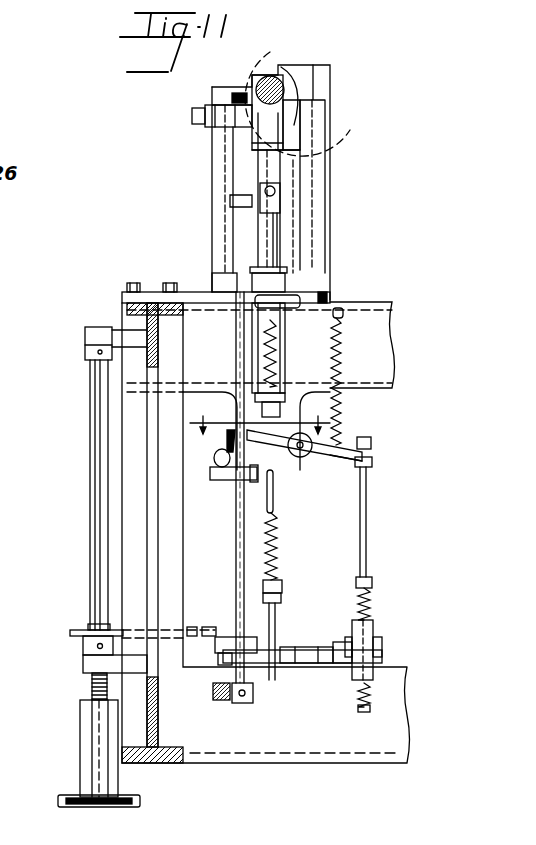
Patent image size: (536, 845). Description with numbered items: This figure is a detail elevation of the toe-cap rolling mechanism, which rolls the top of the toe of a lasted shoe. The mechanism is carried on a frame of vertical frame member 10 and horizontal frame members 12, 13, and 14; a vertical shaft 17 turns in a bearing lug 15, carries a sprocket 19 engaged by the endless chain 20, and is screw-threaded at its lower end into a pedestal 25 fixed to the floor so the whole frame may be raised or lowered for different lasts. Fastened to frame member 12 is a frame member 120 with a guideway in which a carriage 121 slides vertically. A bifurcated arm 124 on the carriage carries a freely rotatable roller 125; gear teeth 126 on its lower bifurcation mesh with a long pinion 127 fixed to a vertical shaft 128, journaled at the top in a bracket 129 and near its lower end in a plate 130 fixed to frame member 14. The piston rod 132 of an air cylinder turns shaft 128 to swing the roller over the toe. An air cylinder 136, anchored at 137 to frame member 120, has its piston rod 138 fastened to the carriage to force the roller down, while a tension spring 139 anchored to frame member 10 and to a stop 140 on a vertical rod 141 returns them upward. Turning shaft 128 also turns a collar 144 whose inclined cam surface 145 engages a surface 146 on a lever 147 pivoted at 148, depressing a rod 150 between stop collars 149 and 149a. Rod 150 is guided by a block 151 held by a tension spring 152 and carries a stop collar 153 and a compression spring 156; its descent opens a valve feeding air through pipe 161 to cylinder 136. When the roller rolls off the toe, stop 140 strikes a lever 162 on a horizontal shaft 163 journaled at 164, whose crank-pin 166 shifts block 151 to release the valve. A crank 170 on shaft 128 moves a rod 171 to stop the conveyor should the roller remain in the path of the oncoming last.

The vertical frame member 10 is at (122, 302).
The horizontal frame member 12 is at (368, 302).
The horizontal frame member 13 is at (260, 415).
The horizontal frame member 14 is at (282, 740).
The bearing lug 15 is at (85, 335).
The vertical shaft 17 is at (103, 368).
The sprocket 19 is at (95, 630).
The endless chain 20 is at (83, 645).
The pedestal 25 is at (92, 727).
The frame member 120 is at (292, 232).
The carriage 121 is at (292, 122).
The bifurcated arm 124 is at (273, 133).
The roller 125 is at (268, 70).
The gear teeth 126 is at (287, 133).
The long pinion 127 is at (262, 170).
The vertical shaft 128 is at (250, 206).
The bracket 129 is at (200, 130).
The plate 130 is at (332, 668).
The piston rod 132 is at (229, 703).
The air cylinder 136 is at (287, 310).
The anchorage 137 is at (283, 407).
The piston rod 138 is at (277, 233).
The tension spring 139 is at (277, 540).
The stop 140 is at (282, 585).
The vertical rod 141 is at (262, 175).
The collar 144 is at (215, 472).
The inclined cam surface 145 is at (220, 480).
The cam surface 146 is at (250, 440).
The lever 147 is at (340, 452).
The pivot 148 is at (300, 457).
The stop collar 149 is at (371, 445).
The stop collar 149a is at (368, 463).
The rod 150 is at (366, 525).
The block 151 is at (357, 647).
The tension spring 152 is at (372, 706).
The stop collar 153 is at (372, 580).
The compression spring 156 is at (370, 600).
The pipe 161 is at (310, 270).
The lever 162 is at (275, 680).
The horizontal shaft 163 is at (300, 650).
The journal 164 is at (347, 675).
The crank-pin 166 is at (374, 656).
The crank 170 is at (225, 640).
The rod 171 is at (218, 655).